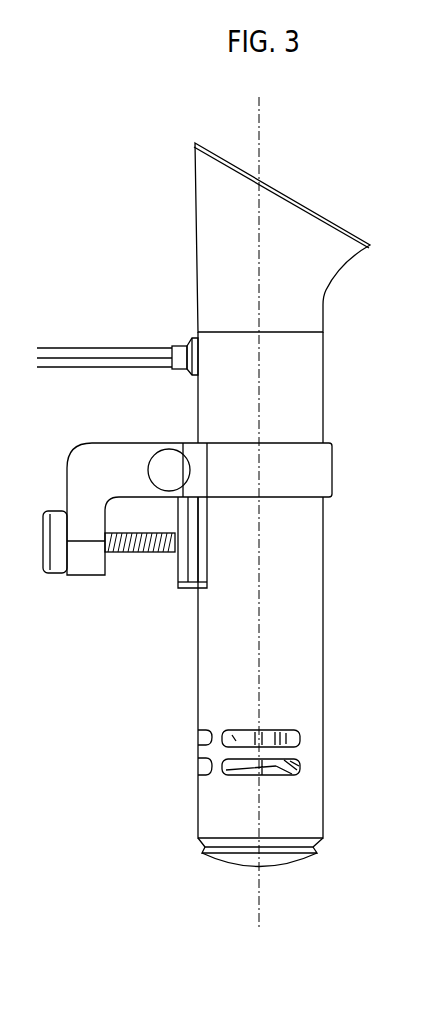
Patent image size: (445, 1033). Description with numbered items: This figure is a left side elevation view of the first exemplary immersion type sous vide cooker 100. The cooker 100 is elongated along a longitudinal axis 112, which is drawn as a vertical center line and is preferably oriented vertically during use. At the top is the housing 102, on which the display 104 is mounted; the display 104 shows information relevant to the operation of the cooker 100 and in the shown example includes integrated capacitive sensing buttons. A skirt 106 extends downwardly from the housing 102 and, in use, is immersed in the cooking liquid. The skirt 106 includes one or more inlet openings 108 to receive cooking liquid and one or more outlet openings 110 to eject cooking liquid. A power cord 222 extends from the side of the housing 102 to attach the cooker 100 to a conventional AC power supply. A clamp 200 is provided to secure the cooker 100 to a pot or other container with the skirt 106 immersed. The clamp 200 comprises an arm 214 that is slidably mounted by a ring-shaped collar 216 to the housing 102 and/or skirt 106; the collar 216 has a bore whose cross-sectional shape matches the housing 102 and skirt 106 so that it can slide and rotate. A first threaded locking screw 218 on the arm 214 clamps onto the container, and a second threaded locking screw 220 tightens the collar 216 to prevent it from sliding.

The sous vide cooker 100 is at (366, 204).
The housing 102 is at (295, 408).
The display 104 is at (285, 191).
The skirt 106 is at (208, 645).
The inlet openings 108 is at (202, 765).
The outlet openings 110 is at (313, 847).
The longitudinal axis 112 is at (258, 120).
The clamp 200 is at (88, 442).
The arm 214 is at (90, 477).
The collar 216 is at (320, 470).
The first threaded locking screw 218 is at (136, 552).
The second threaded locking screw 220 is at (167, 452).
The power cord 222 is at (122, 346).